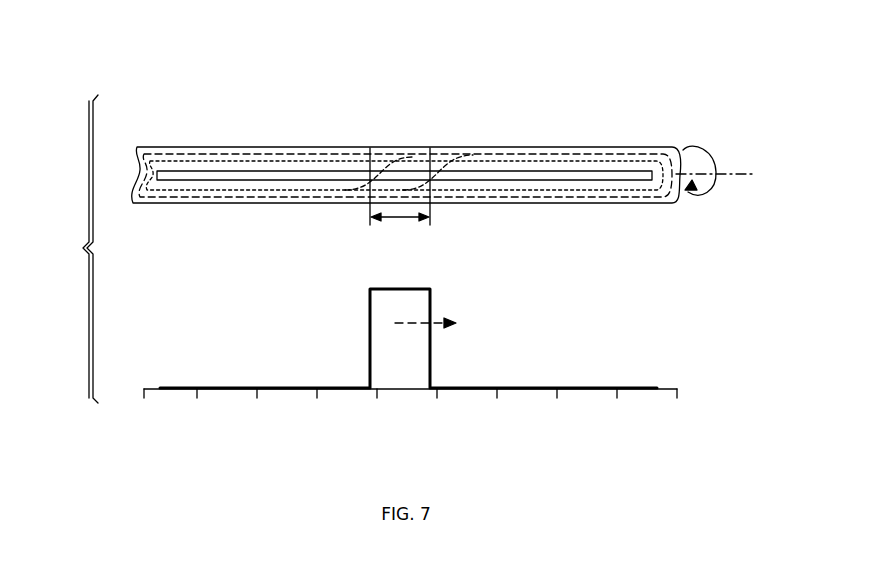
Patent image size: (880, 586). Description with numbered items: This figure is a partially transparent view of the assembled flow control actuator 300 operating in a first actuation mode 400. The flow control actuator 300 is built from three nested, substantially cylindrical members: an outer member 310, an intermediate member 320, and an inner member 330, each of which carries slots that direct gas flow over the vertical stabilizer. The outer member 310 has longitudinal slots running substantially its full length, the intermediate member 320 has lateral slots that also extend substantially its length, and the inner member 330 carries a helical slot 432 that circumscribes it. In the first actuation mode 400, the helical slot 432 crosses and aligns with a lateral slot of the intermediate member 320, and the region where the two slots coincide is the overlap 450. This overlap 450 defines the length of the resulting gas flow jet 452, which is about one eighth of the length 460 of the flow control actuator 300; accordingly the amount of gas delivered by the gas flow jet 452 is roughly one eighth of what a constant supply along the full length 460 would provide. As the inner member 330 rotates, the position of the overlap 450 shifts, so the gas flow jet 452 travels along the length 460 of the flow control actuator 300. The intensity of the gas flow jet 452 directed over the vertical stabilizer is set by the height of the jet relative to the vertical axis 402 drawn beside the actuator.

The first actuation mode 400 is at (155, 88).
The vertical axis 402 is at (83, 248).
The flow control actuator 300 is at (571, 139).
The inner member 330 is at (650, 162).
The intermediate member 320 is at (668, 158).
The outer member 310 is at (680, 150).
The helical slot 432 is at (430, 165).
The overlap 450 is at (402, 221).
The gas flow jet 452 is at (368, 340).
The length 460 is at (683, 399).